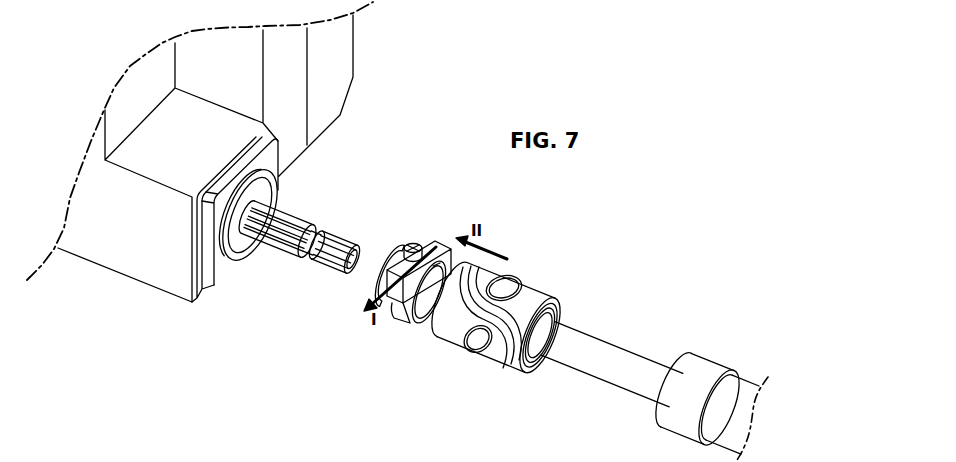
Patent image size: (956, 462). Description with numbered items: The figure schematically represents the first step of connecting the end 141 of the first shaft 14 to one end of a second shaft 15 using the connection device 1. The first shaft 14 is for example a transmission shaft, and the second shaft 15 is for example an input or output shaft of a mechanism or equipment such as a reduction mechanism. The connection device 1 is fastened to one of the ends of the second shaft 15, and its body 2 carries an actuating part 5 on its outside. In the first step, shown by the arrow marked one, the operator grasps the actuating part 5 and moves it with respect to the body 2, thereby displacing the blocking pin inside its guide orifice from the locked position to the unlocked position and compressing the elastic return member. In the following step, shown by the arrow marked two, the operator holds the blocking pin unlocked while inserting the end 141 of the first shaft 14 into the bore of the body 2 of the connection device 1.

The connection device 1 is at (442, 283).
The body 2 is at (384, 258).
The actuating part 5 is at (426, 248).
The first shaft 14 is at (274, 259).
The second shaft 15 is at (594, 364).
The end of the first shaft 141 is at (378, 293).